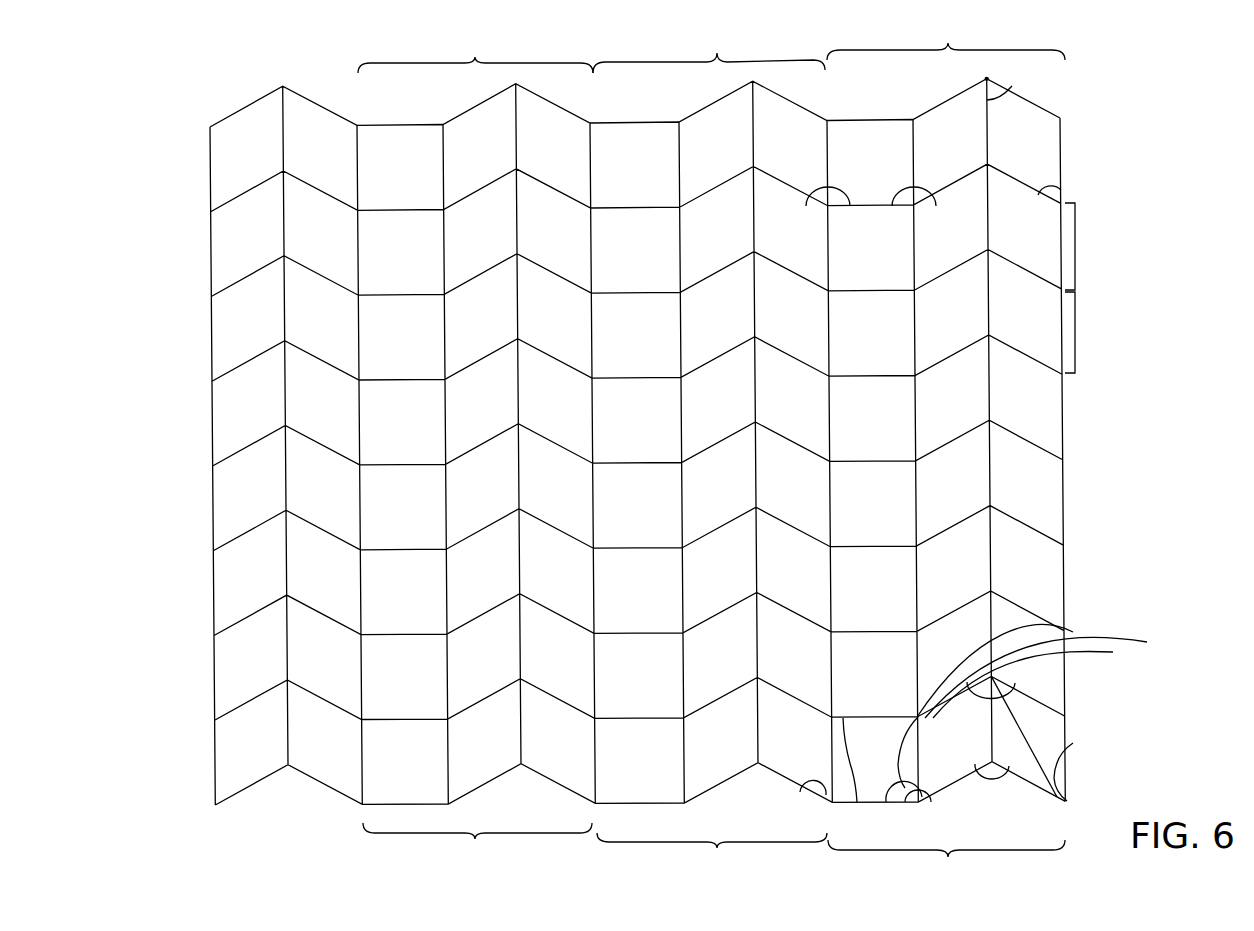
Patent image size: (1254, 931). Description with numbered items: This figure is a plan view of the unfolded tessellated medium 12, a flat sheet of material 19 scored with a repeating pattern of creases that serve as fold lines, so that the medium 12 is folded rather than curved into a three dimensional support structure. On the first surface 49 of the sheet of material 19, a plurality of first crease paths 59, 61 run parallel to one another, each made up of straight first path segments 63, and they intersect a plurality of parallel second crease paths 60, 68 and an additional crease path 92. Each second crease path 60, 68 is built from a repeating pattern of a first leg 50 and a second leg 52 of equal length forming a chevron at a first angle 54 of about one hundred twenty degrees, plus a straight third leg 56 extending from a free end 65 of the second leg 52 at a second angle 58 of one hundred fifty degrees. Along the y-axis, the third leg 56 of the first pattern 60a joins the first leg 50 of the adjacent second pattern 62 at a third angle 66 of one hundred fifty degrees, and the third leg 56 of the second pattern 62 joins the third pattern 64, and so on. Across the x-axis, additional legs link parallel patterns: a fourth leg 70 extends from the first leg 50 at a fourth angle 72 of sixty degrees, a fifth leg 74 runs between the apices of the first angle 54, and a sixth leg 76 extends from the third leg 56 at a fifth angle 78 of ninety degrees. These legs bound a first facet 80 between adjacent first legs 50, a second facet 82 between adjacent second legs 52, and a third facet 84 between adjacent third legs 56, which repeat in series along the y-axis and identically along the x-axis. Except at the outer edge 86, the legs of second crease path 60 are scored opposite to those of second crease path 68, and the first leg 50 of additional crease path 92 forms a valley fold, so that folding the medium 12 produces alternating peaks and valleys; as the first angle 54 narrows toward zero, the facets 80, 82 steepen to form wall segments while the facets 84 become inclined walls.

The tessellated medium 12 is at (1100, 118).
The sheet of material 19 is at (215, 591).
The first surface 49 is at (897, 493).
The first leg 50 is at (1043, 703).
The second leg 52 is at (716, 787).
The first angle 54 is at (851, 803).
The third leg 56 is at (632, 804).
The second angle 58 is at (900, 196).
The first crease path 59 is at (1060, 118).
The second crease path 60 is at (1068, 801).
The first pattern 60a is at (946, 447).
The first crease path 61 is at (985, 78).
The second pattern 62 is at (710, 447).
The first path segment 63 is at (1078, 247).
The third pattern 64 is at (475, 446).
The free end 65 is at (928, 808).
The third angle 66 is at (838, 195).
The second crease path 68 is at (1066, 716).
The fourth leg 70 is at (1066, 739).
The fourth angle 72 is at (1052, 180).
The fifth leg 74 is at (1000, 100).
The sixth leg 76 is at (915, 135).
The fifth angle 78 is at (907, 803).
The first facet 80 is at (306, 254).
The second facet 82 is at (226, 258).
The third facet 84 is at (386, 273).
The outer edge 86 is at (210, 413).
The additional crease path 92 is at (1073, 632).